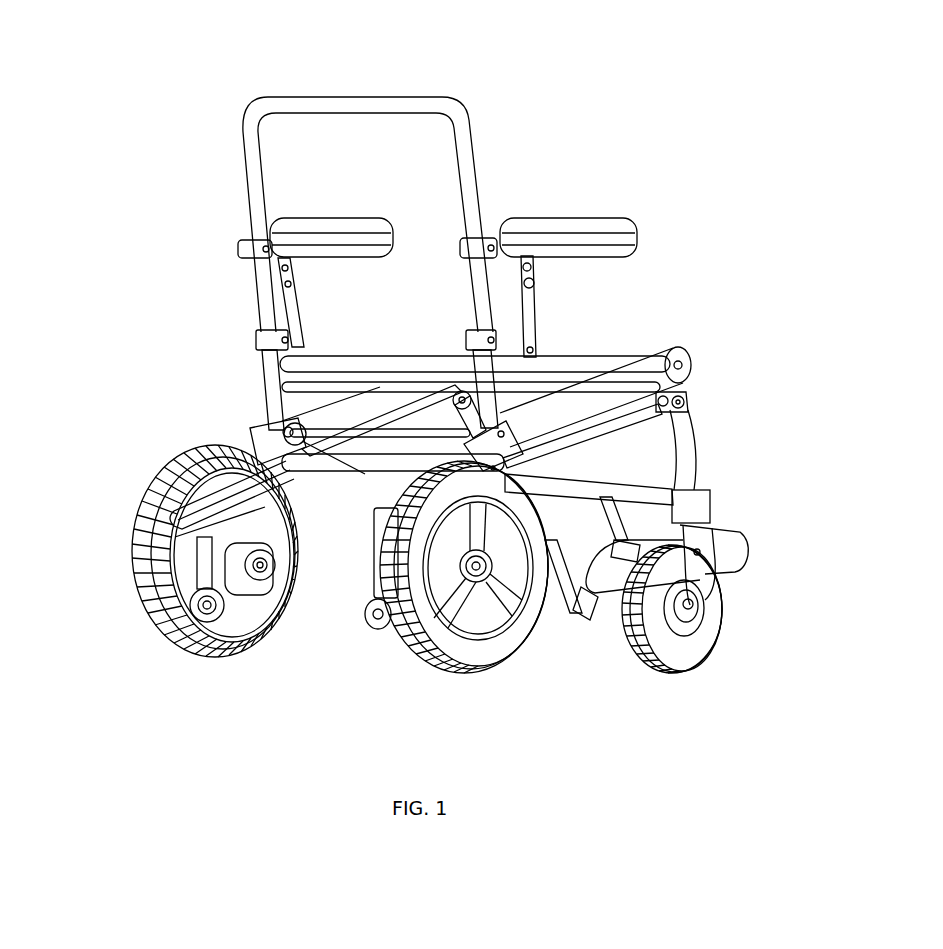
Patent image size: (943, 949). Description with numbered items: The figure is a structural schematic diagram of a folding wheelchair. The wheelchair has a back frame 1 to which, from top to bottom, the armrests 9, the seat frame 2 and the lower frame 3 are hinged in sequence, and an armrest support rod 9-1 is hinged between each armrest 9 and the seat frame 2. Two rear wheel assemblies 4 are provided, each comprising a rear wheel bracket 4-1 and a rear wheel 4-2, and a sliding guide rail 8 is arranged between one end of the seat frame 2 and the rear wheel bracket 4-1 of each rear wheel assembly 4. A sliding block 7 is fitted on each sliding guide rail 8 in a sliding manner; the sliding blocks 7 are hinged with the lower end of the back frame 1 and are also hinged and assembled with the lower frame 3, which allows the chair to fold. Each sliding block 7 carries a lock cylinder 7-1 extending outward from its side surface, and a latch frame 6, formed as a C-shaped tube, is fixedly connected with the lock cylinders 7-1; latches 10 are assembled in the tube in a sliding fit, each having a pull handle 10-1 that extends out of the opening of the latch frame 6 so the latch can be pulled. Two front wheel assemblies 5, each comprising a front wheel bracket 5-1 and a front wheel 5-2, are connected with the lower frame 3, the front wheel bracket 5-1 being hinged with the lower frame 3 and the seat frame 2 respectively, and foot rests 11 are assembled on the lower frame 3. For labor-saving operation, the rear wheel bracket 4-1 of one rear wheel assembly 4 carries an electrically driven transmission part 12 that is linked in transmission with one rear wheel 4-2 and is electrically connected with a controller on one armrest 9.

The back frame 1 is at (412, 105).
The seat frame 2 is at (265, 352).
The lower frame 3 is at (267, 433).
The rear wheel assembly 4 is at (155, 515).
The rear wheel bracket 4-1 is at (185, 563).
The rear wheel 4-2 is at (150, 613).
The front wheel assembly 5 is at (700, 588).
The front wheel bracket 5-1 is at (697, 457).
The front wheel 5-2 is at (672, 653).
The latch frame 6 is at (320, 472).
The sliding block 7 is at (252, 442).
The lock cylinder 7-1 is at (290, 490).
The sliding guide rail 8 is at (673, 350).
The armrest 9 is at (550, 227).
The armrest support rod 9-1 is at (528, 327).
The latch 10 is at (353, 477).
The pull handle 10-1 is at (373, 483).
The foot rest 11 is at (740, 543).
The electrically driven transmission part 12 is at (172, 643).